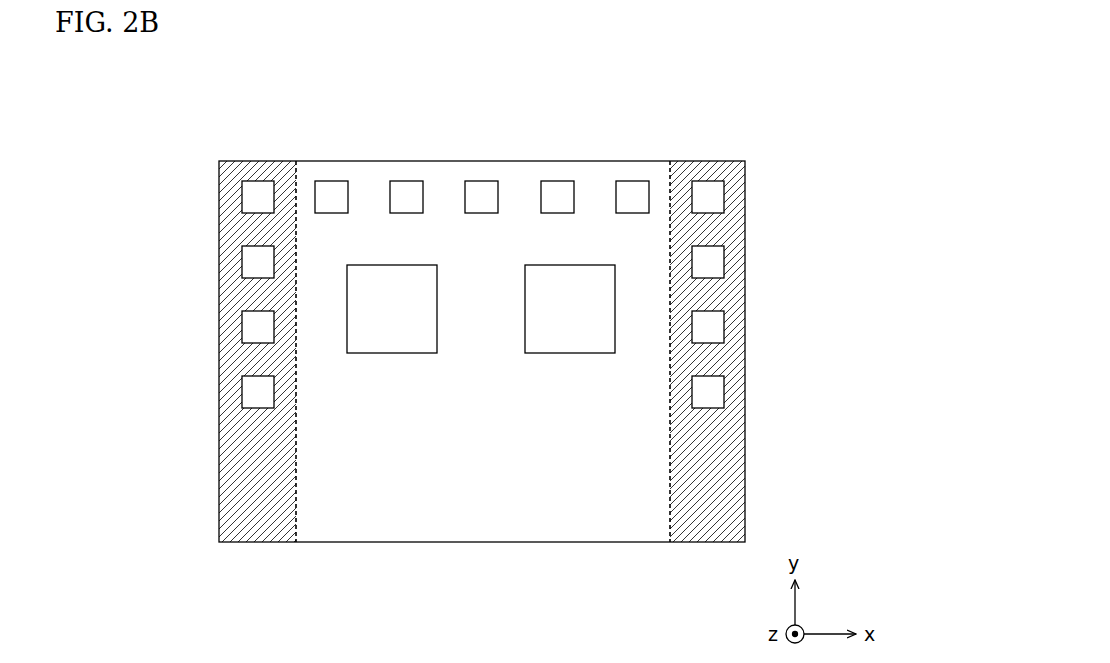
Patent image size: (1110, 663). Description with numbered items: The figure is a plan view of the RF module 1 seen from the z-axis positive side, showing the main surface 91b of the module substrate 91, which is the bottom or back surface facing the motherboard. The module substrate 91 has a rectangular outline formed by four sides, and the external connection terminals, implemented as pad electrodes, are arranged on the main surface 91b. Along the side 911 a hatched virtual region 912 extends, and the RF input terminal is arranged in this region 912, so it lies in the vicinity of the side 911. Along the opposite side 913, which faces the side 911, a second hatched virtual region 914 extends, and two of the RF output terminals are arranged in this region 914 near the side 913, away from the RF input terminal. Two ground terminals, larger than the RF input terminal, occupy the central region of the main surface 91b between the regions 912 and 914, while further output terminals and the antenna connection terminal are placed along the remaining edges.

The RF module 1 is at (786, 124).
The module substrate 91 is at (560, 161).
The main surface 91b is at (643, 169).
The side 911 is at (745, 466).
The region 912 is at (700, 529).
The side 913 is at (219, 468).
The region 914 is at (254, 528).